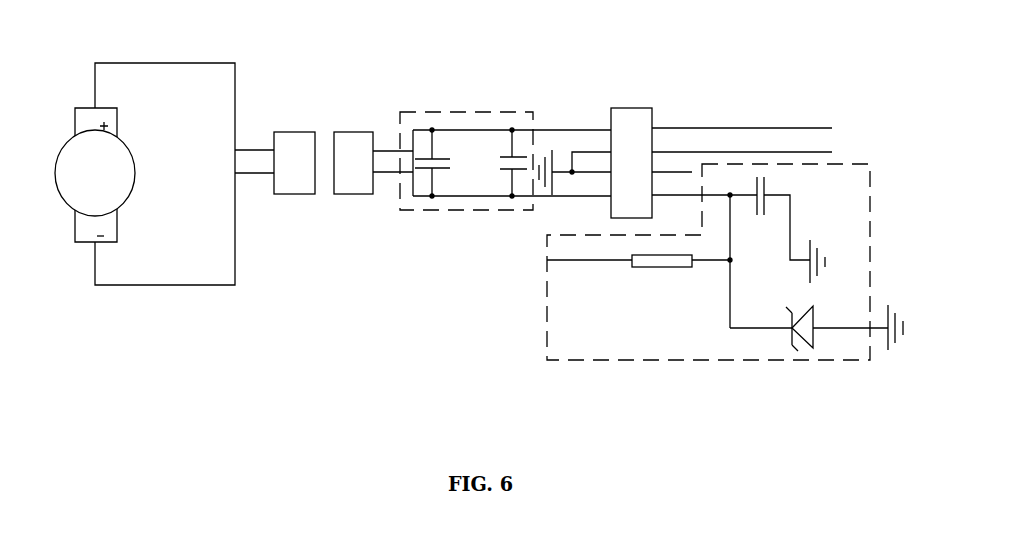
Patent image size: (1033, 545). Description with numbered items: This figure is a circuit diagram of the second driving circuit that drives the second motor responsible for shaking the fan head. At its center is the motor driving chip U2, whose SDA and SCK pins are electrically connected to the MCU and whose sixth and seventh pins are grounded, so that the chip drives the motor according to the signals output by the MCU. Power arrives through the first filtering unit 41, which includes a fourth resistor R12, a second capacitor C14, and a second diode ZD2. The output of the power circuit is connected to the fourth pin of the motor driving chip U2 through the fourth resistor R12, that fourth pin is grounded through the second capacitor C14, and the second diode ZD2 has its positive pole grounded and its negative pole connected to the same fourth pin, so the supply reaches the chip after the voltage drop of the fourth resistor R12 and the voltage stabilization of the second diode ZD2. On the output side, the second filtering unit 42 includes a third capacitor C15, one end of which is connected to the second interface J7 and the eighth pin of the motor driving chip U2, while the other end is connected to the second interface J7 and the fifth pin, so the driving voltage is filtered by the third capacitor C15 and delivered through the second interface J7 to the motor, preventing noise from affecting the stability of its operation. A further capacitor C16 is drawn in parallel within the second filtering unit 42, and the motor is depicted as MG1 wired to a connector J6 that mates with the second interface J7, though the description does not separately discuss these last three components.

The first filtering unit 41 is at (725, 302).
The second filtering unit 42 is at (505, 196).
The motor MG1 is at (164, 174).
The motor connector J6 is at (294, 154).
The second interface J7 is at (373, 154).
The motor driving chip U2 is at (712, 152).
The second capacitor C14 is at (784, 196).
The third capacitor C15 is at (504, 163).
The capacitor C16 is at (447, 163).
The fourth resistor R12 is at (662, 275).
The second diode ZD2 is at (818, 325).